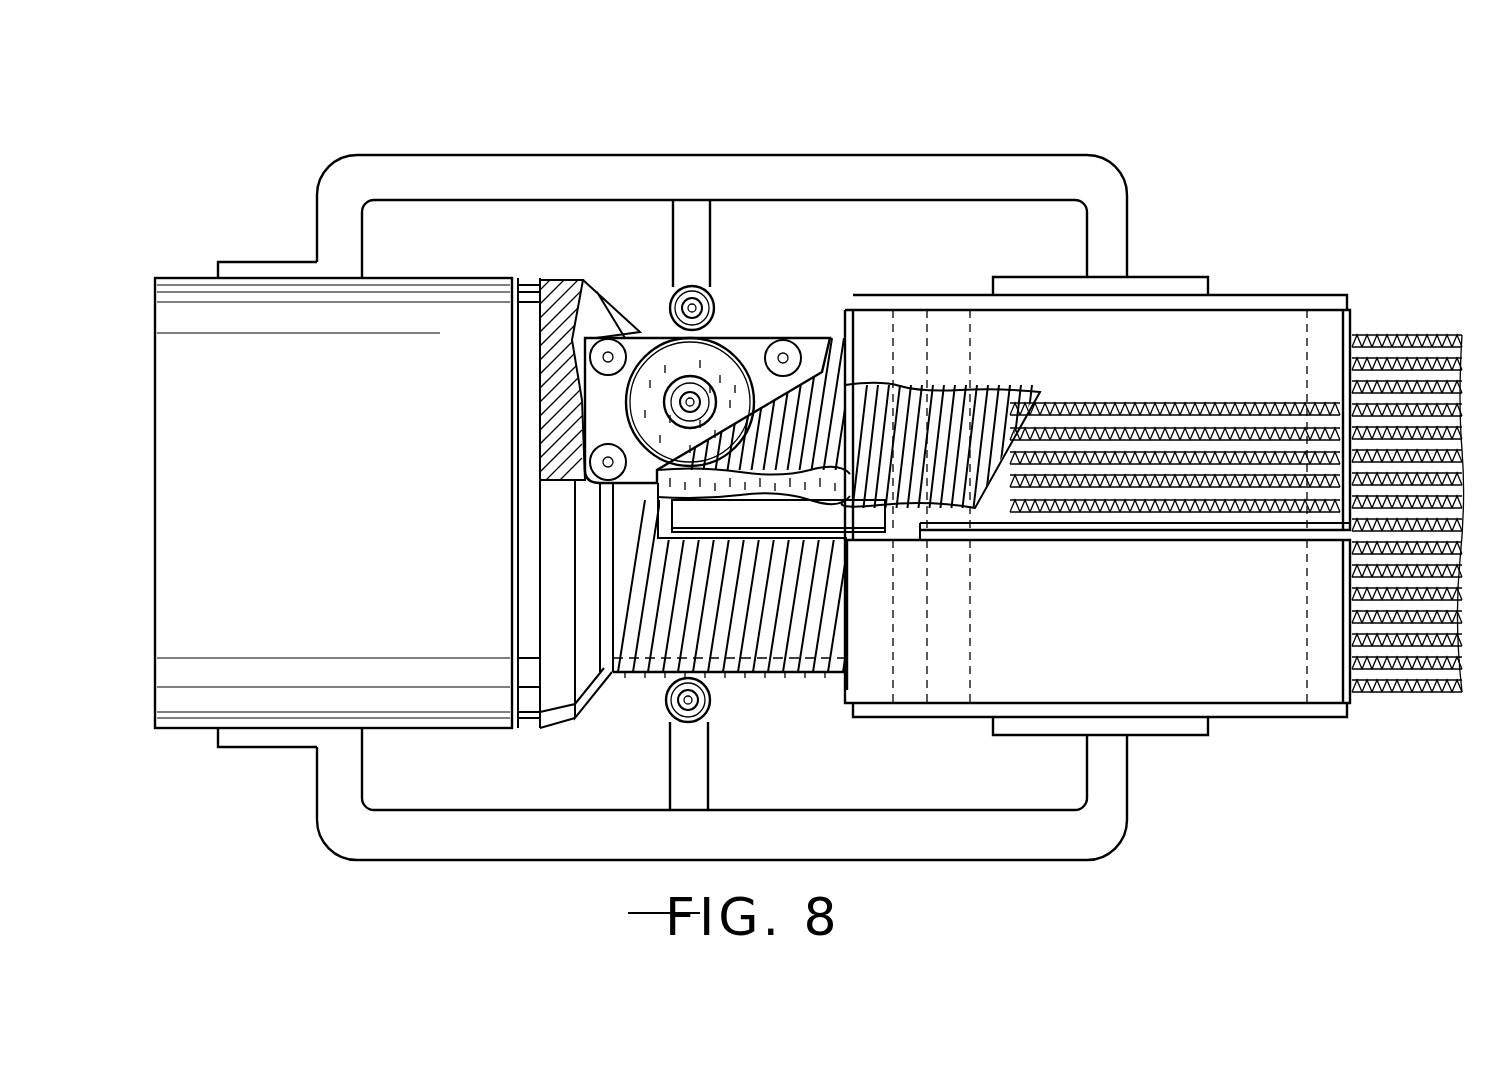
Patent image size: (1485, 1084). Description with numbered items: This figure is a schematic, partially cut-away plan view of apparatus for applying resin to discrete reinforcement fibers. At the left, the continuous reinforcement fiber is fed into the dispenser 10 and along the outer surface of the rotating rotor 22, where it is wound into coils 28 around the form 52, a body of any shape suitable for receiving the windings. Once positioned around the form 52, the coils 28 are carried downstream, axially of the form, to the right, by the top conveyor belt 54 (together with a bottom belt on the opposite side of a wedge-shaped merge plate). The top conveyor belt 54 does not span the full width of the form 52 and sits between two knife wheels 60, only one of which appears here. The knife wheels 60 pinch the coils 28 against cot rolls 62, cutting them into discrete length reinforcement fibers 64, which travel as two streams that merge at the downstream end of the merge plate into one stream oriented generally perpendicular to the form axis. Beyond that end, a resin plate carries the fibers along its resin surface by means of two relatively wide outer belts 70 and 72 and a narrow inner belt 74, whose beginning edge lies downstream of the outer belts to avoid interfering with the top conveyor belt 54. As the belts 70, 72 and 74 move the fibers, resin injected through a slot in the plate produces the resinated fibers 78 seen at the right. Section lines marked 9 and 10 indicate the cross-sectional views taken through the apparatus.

The rotor 22 is at (540, 735).
The coils 28 is at (643, 674).
The form 52 is at (780, 655).
The top conveyor belt 54 is at (862, 520).
The knife wheels 60 is at (732, 336).
The cot rolls 62 is at (668, 302).
The discrete length reinforcement fibers 64 is at (758, 338).
The outer belt 70 is at (1288, 295).
The outer belt 72 is at (1240, 717).
The inner belt 74 is at (1093, 523).
The resinated fibers 78 is at (1150, 435).
The section line 9- 9 is at (1467, 472).
The section line 10- 10 is at (1030, 728).